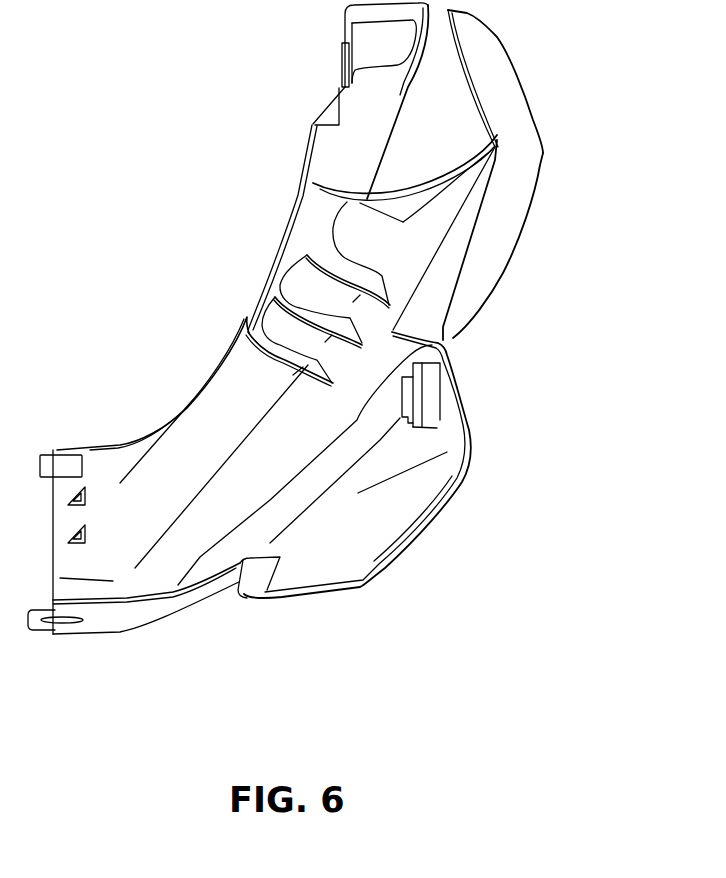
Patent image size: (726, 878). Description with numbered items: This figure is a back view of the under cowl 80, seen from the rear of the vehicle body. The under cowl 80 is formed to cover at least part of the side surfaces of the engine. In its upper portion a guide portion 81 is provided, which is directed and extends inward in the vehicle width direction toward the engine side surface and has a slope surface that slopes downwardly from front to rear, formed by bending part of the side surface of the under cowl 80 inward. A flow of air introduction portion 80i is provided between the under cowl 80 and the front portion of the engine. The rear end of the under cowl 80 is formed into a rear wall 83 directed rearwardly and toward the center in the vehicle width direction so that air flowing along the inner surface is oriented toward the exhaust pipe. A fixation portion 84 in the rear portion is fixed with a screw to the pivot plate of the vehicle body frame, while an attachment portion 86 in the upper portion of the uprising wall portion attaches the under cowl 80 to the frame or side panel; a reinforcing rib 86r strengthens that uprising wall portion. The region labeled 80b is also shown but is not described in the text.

The under cowl 80 is at (330, 318).
The upper panel portion 80b is at (447, 100).
The flow of air introduction portion 80i is at (90, 423).
The guide portion 81 is at (480, 220).
The rear wall 83 is at (471, 436).
The fixation portion 84 is at (407, 393).
The attachment portion 86 is at (341, 58).
The reinforcing rib 86r is at (272, 340).